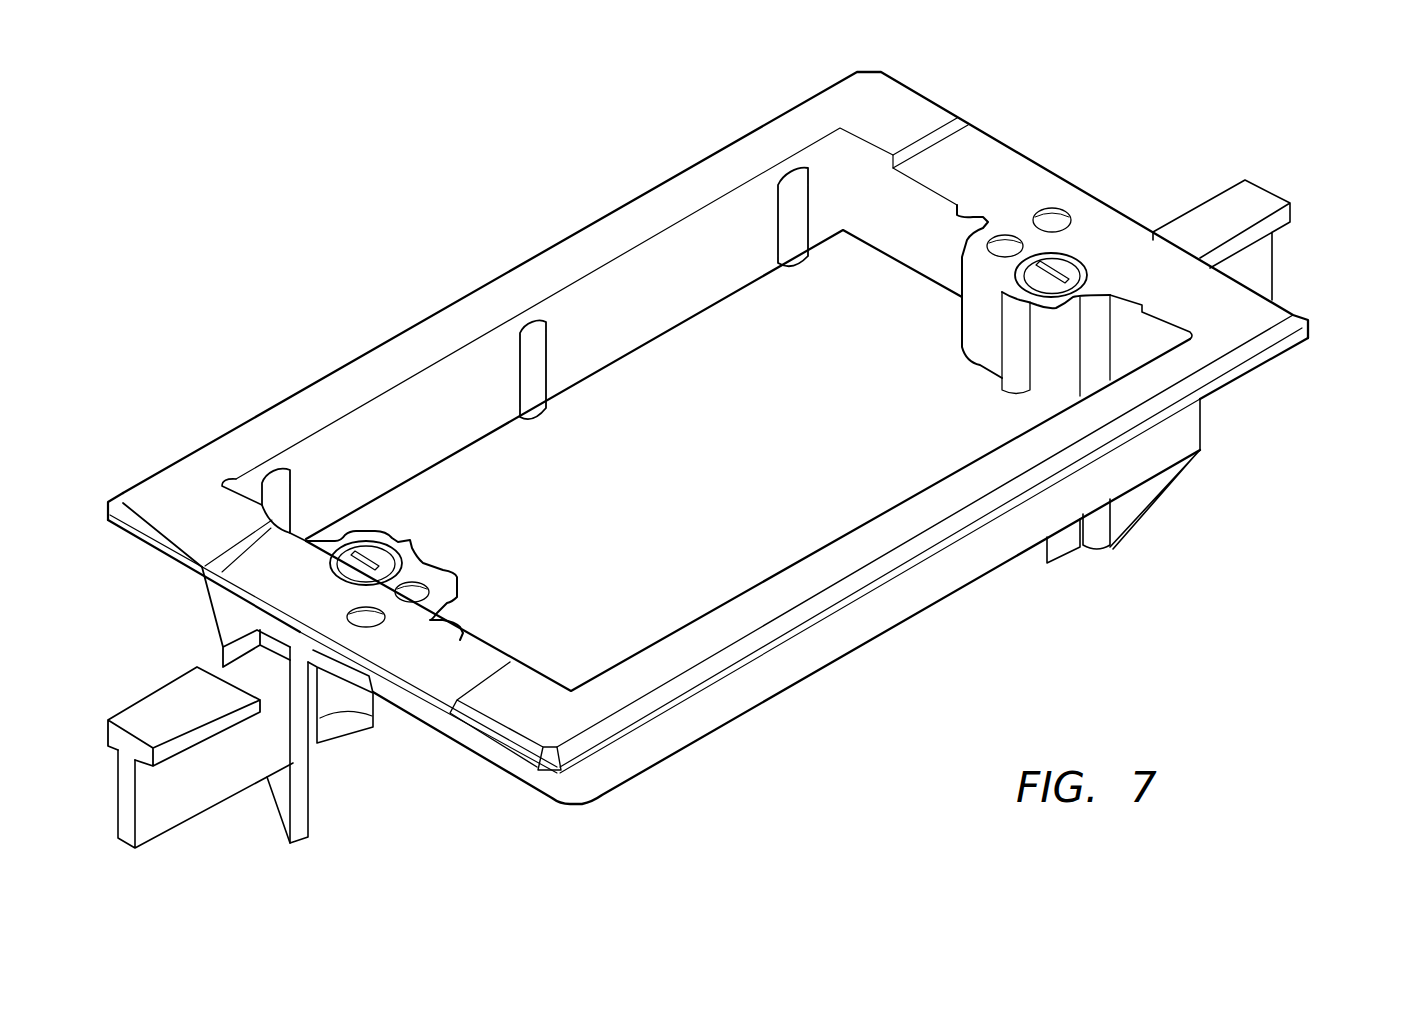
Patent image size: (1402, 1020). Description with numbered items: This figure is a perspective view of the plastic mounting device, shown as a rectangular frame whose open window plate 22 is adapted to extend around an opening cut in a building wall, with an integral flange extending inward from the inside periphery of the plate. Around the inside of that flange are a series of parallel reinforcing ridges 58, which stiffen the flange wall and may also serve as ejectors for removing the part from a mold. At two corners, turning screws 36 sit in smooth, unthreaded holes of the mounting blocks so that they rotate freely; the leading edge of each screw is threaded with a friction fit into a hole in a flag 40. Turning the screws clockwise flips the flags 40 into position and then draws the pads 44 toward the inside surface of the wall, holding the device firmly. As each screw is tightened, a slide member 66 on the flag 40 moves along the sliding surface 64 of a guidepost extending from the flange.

The open window plate 22 is at (887, 112).
The turning screw 36 is at (372, 555).
The flag 40 is at (1273, 268).
The pad 44 is at (1250, 220).
The reinforcing ridge 58 is at (790, 222).
The sliding surface 64 is at (272, 628).
The slide member 66 is at (243, 637).